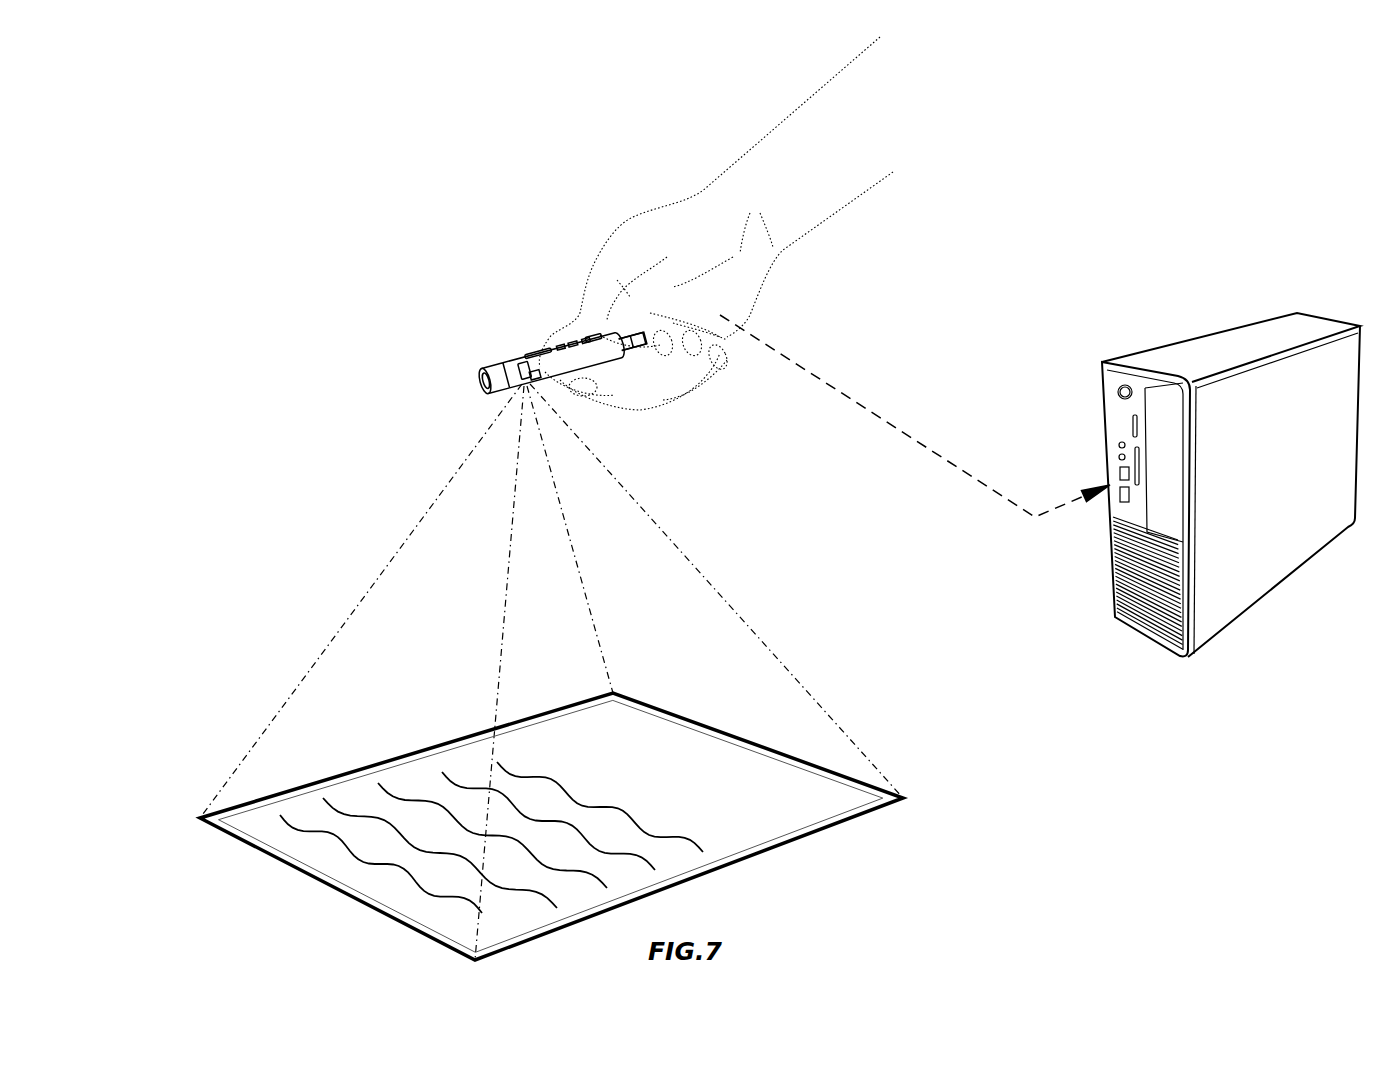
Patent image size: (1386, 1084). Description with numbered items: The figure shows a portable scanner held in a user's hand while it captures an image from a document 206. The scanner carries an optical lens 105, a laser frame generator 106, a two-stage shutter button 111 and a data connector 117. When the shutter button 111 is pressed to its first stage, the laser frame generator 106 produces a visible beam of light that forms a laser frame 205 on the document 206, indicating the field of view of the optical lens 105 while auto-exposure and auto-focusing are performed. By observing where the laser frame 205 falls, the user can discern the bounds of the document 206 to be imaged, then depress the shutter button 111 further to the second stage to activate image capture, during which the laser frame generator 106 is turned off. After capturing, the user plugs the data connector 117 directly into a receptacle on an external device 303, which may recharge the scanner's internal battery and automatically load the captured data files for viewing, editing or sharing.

The optical lens 105 is at (606, 391).
The laser frame generator 106 is at (442, 331).
The two-stage shutter button 111 is at (587, 337).
The data connector 117 is at (727, 298).
The laser frame 205 is at (527, 826).
The document 206 is at (757, 817).
The external device 303 is at (1252, 553).